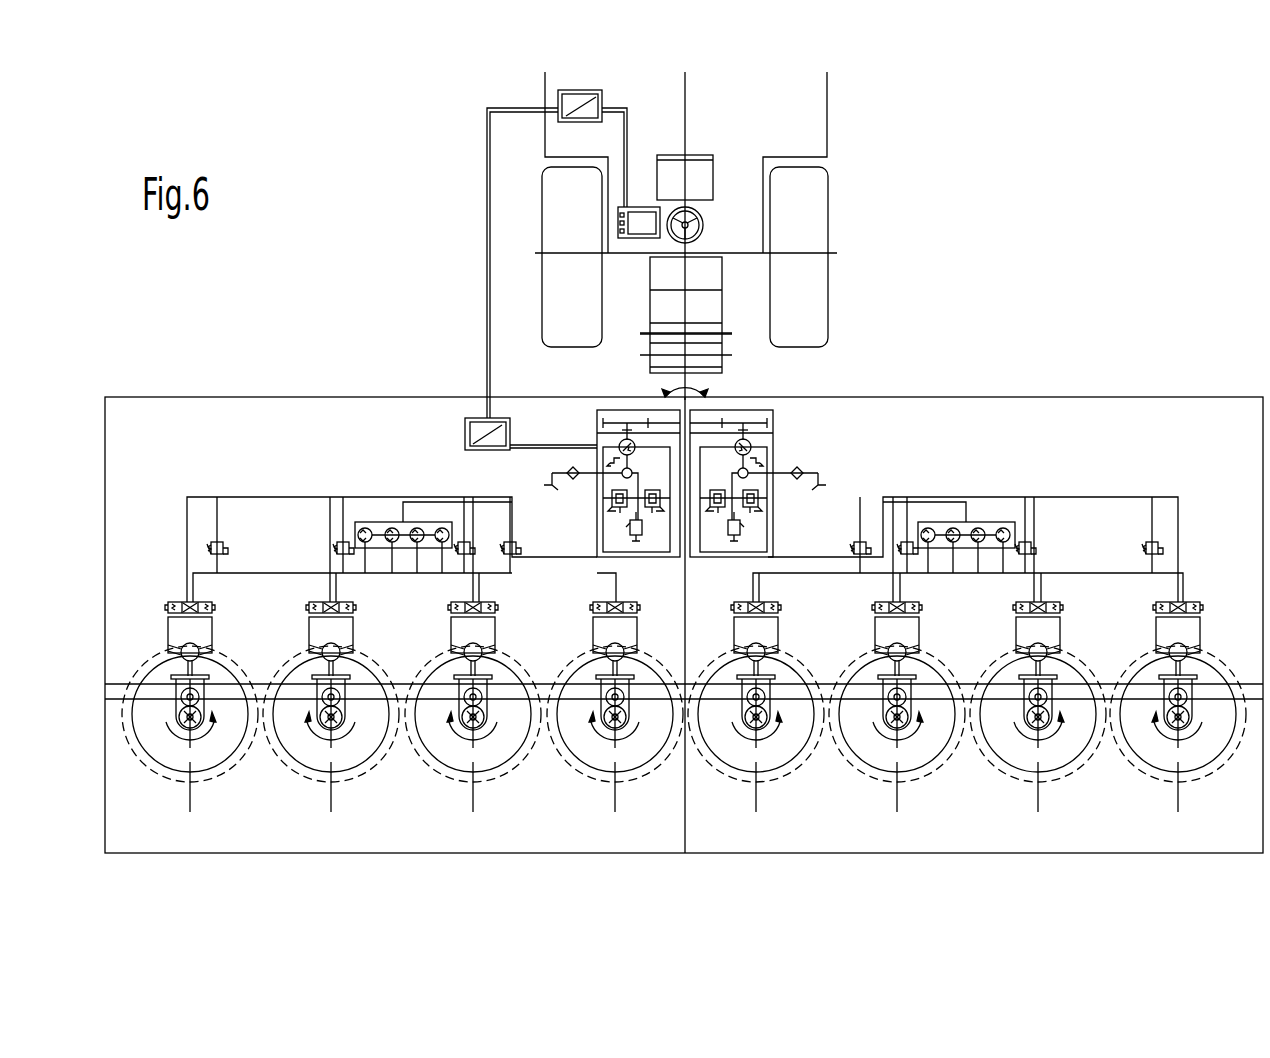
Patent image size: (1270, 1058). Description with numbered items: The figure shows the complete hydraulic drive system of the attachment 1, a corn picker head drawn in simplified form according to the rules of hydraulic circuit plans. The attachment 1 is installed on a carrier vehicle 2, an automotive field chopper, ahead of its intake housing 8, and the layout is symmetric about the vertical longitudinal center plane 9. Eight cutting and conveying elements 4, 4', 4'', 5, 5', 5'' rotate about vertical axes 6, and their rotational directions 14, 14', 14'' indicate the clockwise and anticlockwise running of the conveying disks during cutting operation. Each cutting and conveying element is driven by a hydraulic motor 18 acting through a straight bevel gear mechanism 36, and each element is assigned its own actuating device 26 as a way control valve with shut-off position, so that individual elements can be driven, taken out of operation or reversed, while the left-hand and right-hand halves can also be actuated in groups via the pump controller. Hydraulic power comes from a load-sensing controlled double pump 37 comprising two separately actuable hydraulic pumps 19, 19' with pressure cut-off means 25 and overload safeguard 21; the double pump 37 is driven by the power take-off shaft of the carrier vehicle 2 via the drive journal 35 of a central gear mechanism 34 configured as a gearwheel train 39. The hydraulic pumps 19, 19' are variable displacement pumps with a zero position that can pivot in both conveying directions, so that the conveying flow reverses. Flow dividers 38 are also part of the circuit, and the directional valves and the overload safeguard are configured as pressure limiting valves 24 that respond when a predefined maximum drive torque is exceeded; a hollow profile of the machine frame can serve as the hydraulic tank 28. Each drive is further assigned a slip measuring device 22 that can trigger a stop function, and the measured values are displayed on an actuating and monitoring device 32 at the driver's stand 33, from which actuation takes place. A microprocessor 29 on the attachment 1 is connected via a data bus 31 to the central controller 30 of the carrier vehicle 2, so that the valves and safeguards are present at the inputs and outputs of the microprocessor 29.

The attachment 1 is at (1082, 393).
The carrier vehicle 2 is at (808, 222).
The cutting and conveying element 4 is at (756, 744).
The cutting and conveying element 4' is at (897, 744).
The cutting and conveying element 4'' is at (614, 744).
The cutting and conveying element 5 is at (615, 744).
The cutting and conveying element 5' is at (825, 744).
The cutting and conveying element 5'' is at (331, 744).
The vertical axes 6 is at (186, 730).
The intake housing 8 is at (702, 275).
The vertical longitudinal center plane 9 is at (690, 142).
The rotational direction in the clockwise direction 14 is at (741, 726).
The rotational direction in the anticlockwise direction 14' is at (909, 724).
The rotation direction 14'' is at (204, 724).
The hydraulic motor 18 is at (682, 646).
The straight bevel gear mechanism 36 is at (180, 650).
The hydraulic pump 19 is at (594, 431).
The hydraulic pump 19' is at (775, 433).
The overload safeguard 21 is at (782, 467).
The pressure cutoff means 25 is at (722, 497).
The slip measuring device 22 is at (466, 421).
The microprocessor 29 is at (460, 424).
The pressure limiting valve 24 is at (224, 546).
The control valve 26 is at (187, 600).
The hydraulic tank 28 is at (710, 498).
The central controller 30 is at (596, 102).
The data bus 31 is at (486, 207).
The actuating and monitoring device 32 is at (641, 228).
The driver's stand 33 is at (733, 160).
The central gear mechanism 34 is at (697, 479).
The gearwheel train 39 is at (697, 479).
The drive journal 35 is at (648, 396).
The double pump 37 is at (600, 519).
The flow divider 38 is at (392, 527).